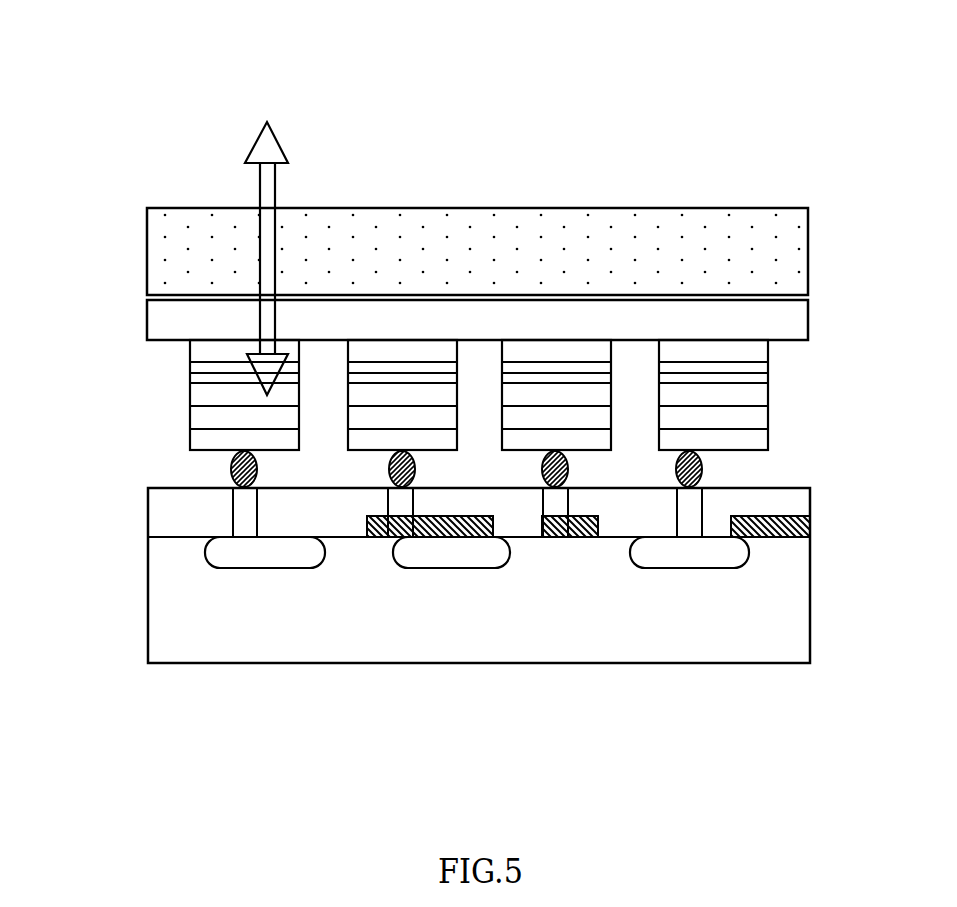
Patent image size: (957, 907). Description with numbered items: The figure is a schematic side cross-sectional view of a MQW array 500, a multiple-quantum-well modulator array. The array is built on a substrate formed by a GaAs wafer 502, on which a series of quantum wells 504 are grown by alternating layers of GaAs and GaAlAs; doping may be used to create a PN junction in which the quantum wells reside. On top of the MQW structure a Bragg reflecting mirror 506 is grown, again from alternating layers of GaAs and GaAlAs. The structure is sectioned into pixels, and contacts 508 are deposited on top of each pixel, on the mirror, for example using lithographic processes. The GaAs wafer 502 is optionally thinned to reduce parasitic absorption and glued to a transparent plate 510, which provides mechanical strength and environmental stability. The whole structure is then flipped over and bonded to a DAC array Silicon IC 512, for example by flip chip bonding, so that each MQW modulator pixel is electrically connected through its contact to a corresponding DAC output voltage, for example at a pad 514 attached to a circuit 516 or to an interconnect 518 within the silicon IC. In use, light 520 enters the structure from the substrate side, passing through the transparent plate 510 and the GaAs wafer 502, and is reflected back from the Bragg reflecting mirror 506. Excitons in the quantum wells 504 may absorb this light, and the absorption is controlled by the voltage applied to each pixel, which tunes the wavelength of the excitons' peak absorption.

The MQW array 500 is at (478, 339).
The GaAs wafer 502 is at (810, 320).
The quantum wells 504 is at (478, 395).
The Bragg reflecting mirror 506 is at (176, 440).
The contacts 508 is at (704, 471).
The transparent plate 510 is at (810, 247).
The DAC array Silicon IC 512 is at (470, 634).
The pad 514 is at (677, 505).
The circuit 516 is at (676, 568).
The interconnect 518 is at (774, 516).
The light 520 is at (276, 192).